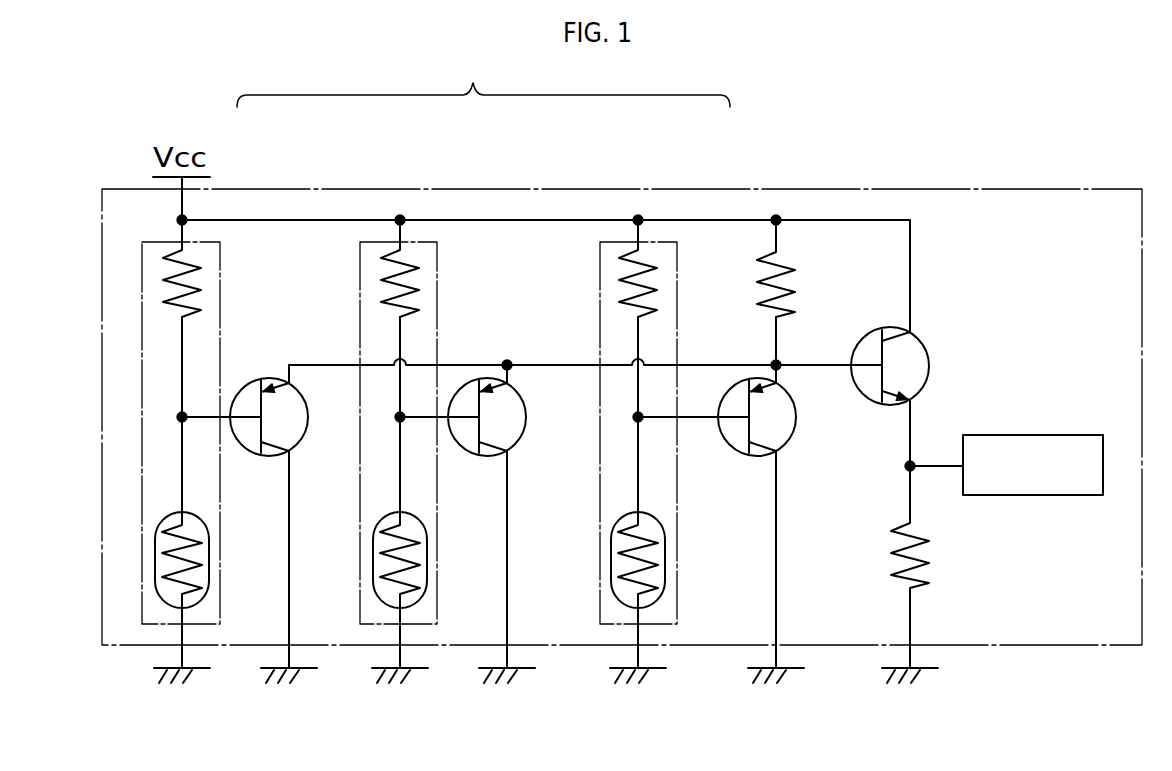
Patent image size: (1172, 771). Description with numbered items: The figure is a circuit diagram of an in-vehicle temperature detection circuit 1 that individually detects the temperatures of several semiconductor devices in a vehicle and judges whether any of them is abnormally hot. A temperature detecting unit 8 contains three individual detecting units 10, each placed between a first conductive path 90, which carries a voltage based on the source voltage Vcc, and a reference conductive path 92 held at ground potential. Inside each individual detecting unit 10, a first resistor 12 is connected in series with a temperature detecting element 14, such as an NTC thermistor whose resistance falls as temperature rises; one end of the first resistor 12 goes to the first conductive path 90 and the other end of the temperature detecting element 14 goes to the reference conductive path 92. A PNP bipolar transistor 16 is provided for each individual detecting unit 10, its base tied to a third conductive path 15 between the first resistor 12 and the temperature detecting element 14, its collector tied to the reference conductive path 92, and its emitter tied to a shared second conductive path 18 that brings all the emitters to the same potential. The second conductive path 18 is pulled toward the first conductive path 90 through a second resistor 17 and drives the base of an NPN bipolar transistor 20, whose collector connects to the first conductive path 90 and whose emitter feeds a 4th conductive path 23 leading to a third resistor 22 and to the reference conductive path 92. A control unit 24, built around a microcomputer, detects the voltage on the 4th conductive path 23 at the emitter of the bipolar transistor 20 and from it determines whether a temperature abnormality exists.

The in-vehicle temperature detection circuit 1 is at (995, 189).
The temperature detecting unit 8 is at (483, 77).
The individual detecting unit 10 is at (197, 240).
The first resistor 12 is at (201, 285).
The temperature detecting element 14 is at (209, 556).
The third conductive path 15 is at (182, 470).
The bipolar transistor 16 is at (308, 420).
The second resistor 17 is at (795, 286).
The second conductive path 18 is at (533, 365).
The bipolar transistor 20 is at (930, 350).
The third resistor 22 is at (929, 558).
The 4th conductive path 23 is at (910, 500).
The control unit 24 is at (1047, 435).
The first conductive path 90 is at (518, 220).
The reference conductive path 92 is at (928, 722).